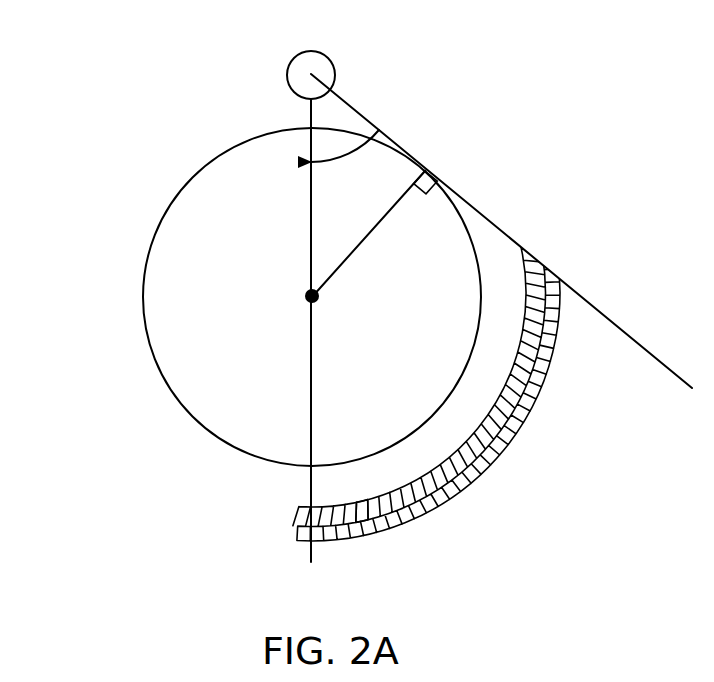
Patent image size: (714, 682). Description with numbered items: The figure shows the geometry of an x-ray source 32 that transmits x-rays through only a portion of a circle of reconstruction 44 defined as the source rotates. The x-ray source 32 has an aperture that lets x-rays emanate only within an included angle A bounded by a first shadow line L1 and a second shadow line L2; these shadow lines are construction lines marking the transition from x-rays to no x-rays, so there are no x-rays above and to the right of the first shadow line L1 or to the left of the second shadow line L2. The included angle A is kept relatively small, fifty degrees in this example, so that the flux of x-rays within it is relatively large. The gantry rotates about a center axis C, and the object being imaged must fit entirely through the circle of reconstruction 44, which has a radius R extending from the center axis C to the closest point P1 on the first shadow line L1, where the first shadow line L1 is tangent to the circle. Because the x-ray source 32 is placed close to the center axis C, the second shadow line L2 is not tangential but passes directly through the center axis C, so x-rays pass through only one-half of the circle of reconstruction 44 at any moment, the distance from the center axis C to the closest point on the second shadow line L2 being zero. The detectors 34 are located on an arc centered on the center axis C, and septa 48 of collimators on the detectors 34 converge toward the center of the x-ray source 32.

The x-ray source 32 is at (336, 70).
The circle of reconstruction 44 is at (146, 261).
The detectors 34 is at (373, 540).
The septa 48 is at (358, 516).
The first shadow line L1 is at (492, 223).
The second shadow line L2 is at (311, 227).
The included angle A is at (378, 130).
The radius R is at (374, 234).
The closest point P1 is at (441, 153).
The center axis C is at (282, 306).